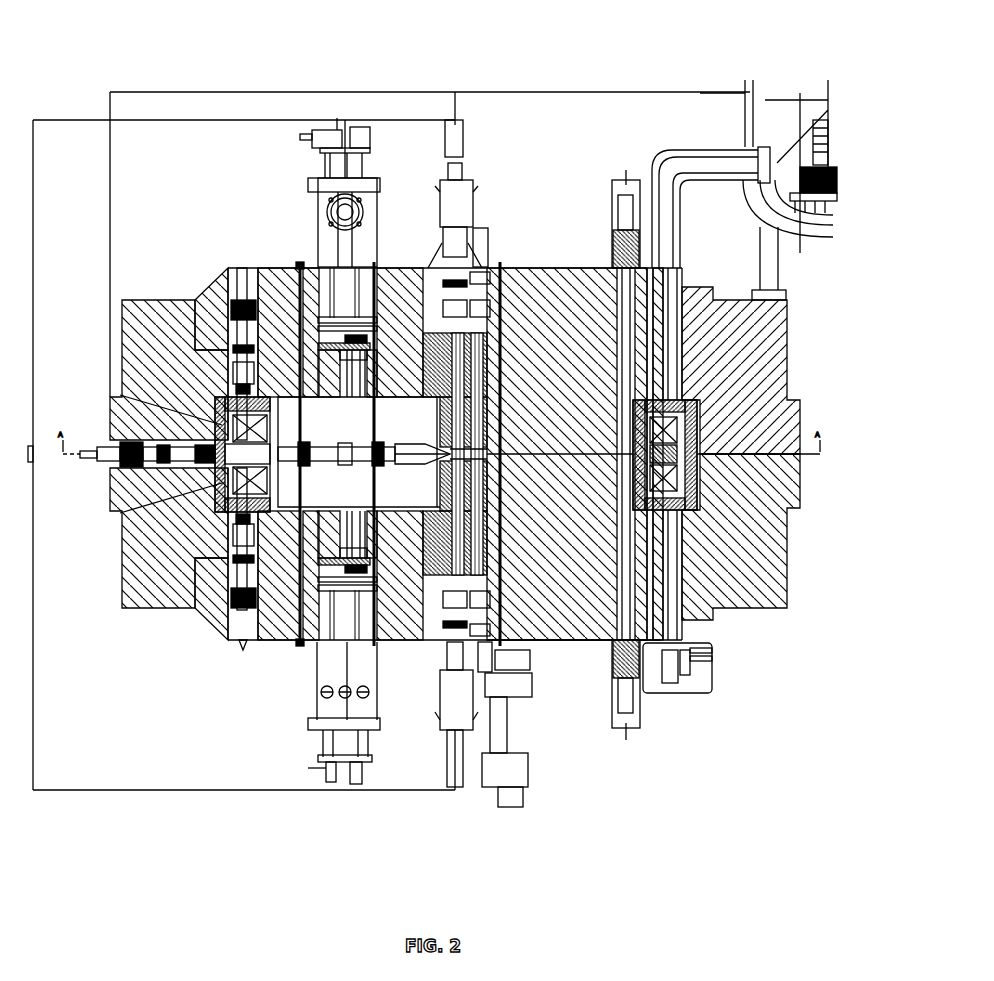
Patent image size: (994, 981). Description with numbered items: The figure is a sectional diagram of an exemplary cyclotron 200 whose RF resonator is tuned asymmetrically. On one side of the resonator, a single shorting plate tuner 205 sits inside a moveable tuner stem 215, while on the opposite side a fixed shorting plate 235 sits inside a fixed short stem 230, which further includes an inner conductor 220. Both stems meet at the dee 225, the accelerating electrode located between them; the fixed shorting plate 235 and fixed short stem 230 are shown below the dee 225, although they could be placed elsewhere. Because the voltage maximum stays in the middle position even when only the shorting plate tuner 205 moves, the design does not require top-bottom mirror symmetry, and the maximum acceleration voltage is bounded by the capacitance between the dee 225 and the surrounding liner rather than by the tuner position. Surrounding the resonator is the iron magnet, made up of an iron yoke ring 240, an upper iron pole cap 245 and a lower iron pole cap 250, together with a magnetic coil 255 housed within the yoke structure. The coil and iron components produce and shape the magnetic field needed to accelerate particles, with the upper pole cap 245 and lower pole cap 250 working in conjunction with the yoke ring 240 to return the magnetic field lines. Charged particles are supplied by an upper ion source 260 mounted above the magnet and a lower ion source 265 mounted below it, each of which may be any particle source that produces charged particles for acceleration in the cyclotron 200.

The cyclotron 200 is at (686, 43).
The shorting plate tuner 205 is at (291, 266).
The moveable tuner stem 215 is at (380, 266).
The inner conductor 220 is at (340, 428).
The dee 225 is at (400, 448).
The fixed short stem 230 is at (297, 641).
The fixed shorting plate 235 is at (373, 511).
The iron yoke ring 240 is at (143, 300).
The upper iron pole cap 245 is at (538, 267).
The lower iron pole cap 250 is at (573, 641).
The magnetic coil 255 is at (667, 482).
The upper ion source 260 is at (617, 182).
The lower ion source 265 is at (633, 728).